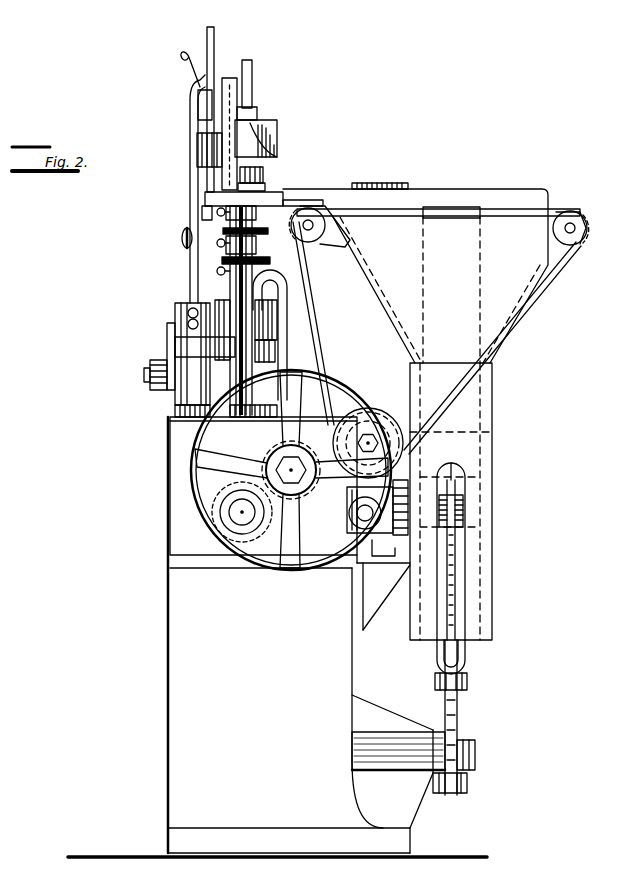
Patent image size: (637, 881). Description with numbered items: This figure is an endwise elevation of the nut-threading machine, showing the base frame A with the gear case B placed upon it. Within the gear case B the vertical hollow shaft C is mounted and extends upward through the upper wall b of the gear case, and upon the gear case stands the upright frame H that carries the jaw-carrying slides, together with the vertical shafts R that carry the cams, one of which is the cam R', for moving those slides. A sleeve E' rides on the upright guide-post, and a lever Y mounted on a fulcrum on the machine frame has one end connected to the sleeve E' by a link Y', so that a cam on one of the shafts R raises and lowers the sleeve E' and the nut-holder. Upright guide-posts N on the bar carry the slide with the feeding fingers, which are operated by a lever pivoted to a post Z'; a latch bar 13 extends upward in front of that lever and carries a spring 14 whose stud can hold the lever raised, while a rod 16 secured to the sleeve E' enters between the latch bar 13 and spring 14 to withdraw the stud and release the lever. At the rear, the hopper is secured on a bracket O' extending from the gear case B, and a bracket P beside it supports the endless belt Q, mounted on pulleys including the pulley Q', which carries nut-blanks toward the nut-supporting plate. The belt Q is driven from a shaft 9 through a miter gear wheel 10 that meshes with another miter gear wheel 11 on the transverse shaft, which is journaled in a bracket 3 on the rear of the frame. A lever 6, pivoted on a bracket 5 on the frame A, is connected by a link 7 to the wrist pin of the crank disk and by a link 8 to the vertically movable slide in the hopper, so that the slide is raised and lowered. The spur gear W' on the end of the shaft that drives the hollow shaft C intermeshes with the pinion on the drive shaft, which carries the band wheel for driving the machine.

The base frame A is at (277, 637).
The gear case B is at (168, 486).
The bracket 3 is at (383, 592).
The bracket 5 is at (398, 745).
The lever 6 is at (460, 715).
The link 7 is at (468, 783).
The link 8 is at (453, 593).
The shaft 9 is at (361, 516).
The miter gear wheel 10 is at (378, 549).
The miter gear wheel 11 is at (401, 522).
The latch bar 13 is at (214, 40).
The spring 14 is at (183, 70).
The rod 16 is at (190, 108).
The bracket P is at (493, 200).
The upper wall b is at (372, 183).
The bracket O' is at (436, 539).
The endless belt Q is at (433, 197).
The pulley Q' is at (508, 329).
The spur gear W' is at (224, 512).
The sleeve E' is at (168, 358).
The lever Y is at (137, 375).
The link Y' is at (151, 356).
The hollow shaft C is at (232, 303).
The upright frame H is at (298, 335).
The vertical shafts R is at (240, 311).
The cam R' is at (251, 231).
The plate I is at (278, 202).
The upright guide-posts N is at (252, 75).
The post Z' is at (266, 134).